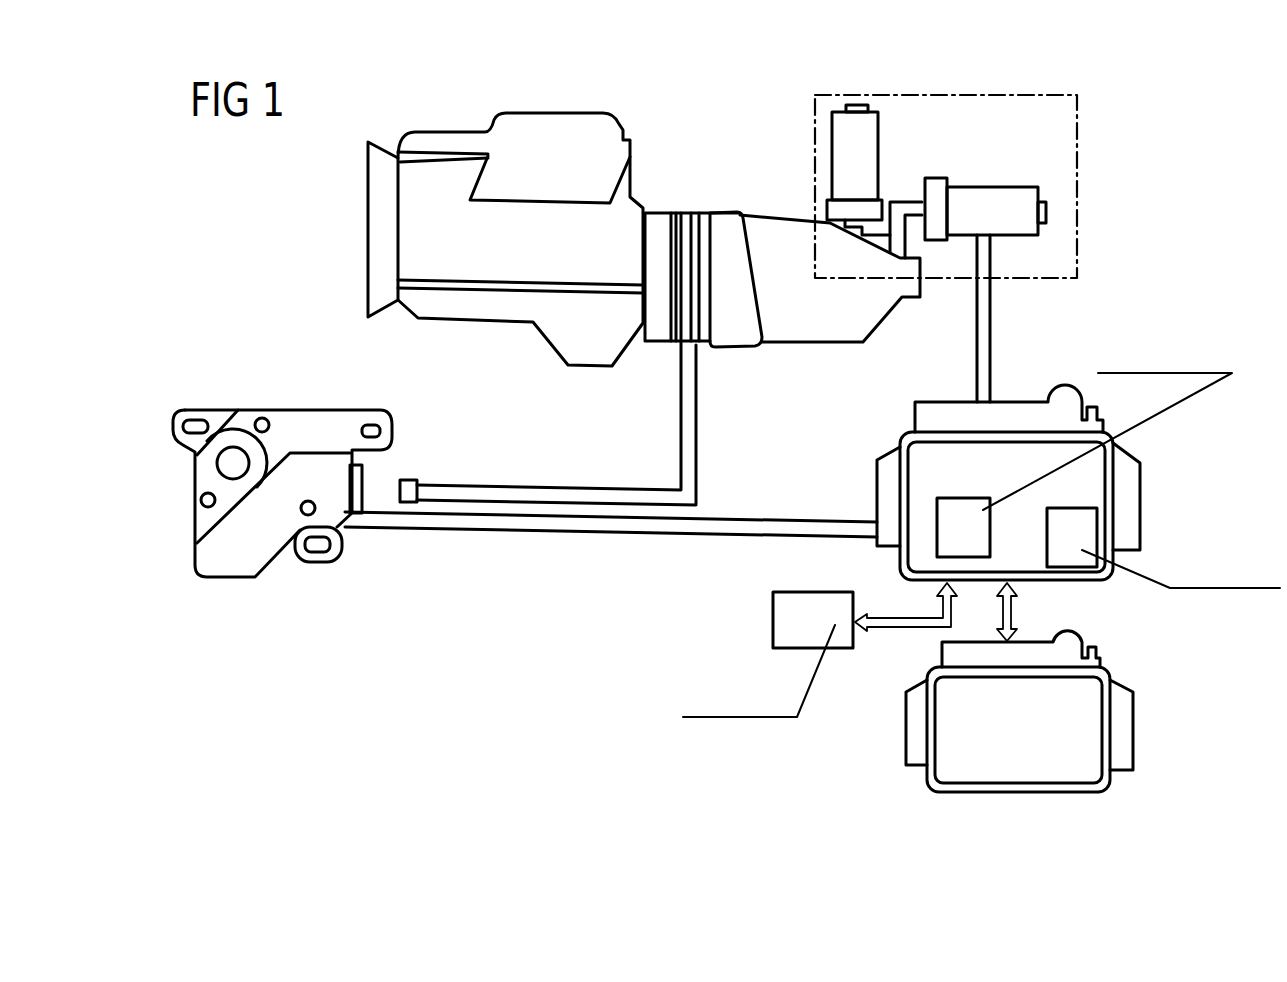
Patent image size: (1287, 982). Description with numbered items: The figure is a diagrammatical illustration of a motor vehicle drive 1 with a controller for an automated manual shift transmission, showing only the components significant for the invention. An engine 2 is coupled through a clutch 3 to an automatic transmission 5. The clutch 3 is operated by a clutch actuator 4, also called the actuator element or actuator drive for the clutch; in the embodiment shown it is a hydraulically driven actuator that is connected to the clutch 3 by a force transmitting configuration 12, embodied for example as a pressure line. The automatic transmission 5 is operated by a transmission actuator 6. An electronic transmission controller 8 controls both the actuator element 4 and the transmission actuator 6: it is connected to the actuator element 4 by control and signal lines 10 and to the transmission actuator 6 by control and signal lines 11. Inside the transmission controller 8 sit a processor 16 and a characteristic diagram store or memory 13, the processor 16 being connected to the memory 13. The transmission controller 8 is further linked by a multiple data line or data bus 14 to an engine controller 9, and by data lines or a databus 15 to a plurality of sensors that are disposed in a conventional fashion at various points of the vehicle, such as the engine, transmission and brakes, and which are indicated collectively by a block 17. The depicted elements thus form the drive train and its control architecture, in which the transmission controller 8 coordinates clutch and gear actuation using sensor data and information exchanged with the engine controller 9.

The motor vehicle drive 1 is at (614, 586).
The engine 2 is at (408, 250).
The clutch 3 is at (686, 222).
The clutch actuator 4 is at (257, 552).
The automatic transmission 5 is at (810, 333).
The transmission actuator 6 is at (1078, 135).
The electronic transmission controller 8 is at (1061, 466).
The engine controller 9 is at (947, 733).
The control and signal lines 10 is at (770, 522).
The control and signal lines 11 is at (984, 347).
The force transmitting configuration 12 is at (507, 490).
The characteristic diagram store or memory 13 is at (1090, 546).
The data bus 14 is at (1015, 607).
The data lines or databus 15 is at (885, 630).
The processor 16 is at (982, 536).
The block of sensors 17 is at (773, 628).